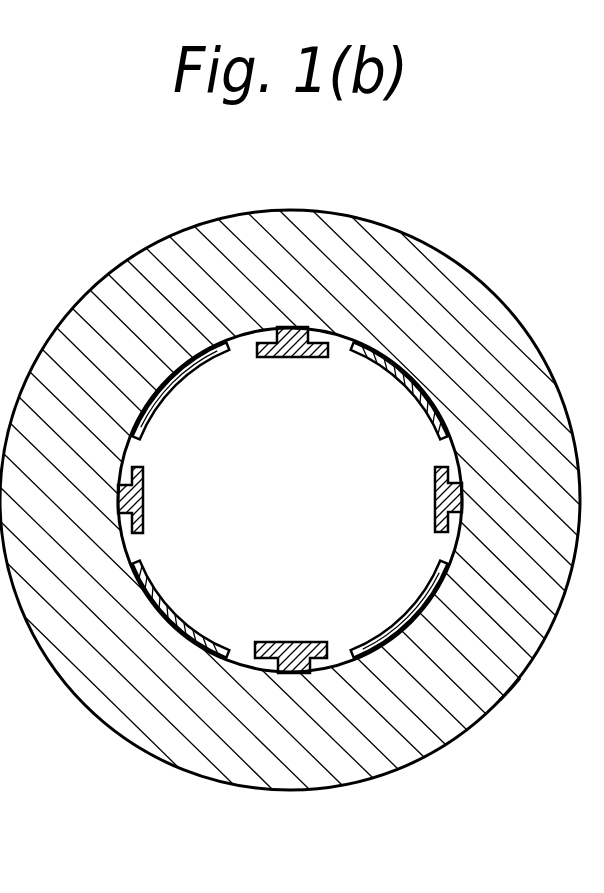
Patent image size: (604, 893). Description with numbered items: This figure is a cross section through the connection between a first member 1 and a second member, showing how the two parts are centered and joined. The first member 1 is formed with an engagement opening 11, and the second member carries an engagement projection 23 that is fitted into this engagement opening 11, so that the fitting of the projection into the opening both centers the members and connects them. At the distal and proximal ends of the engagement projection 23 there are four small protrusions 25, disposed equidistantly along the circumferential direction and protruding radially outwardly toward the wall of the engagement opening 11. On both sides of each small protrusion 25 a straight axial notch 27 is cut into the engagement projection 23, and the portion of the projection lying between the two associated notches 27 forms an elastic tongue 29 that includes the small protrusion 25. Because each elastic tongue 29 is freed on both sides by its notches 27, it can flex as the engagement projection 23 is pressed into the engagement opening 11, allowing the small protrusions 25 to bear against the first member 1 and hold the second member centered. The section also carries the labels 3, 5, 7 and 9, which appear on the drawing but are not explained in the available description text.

The first member 1 is at (440, 245).
The engagement opening 11 is at (462, 500).
The engagement projection 23 is at (182, 386).
The small protrusion 25 is at (287, 327).
The straight axial notch 27 is at (243, 646).
The elastic tongue 29 is at (472, 505).
The unlabeled component 3 is at (7, 331).
The unlabeled component 5 is at (7, 488).
The unlabeled component 7 is at (7, 498).
The unlabeled component 9 is at (7, 745).